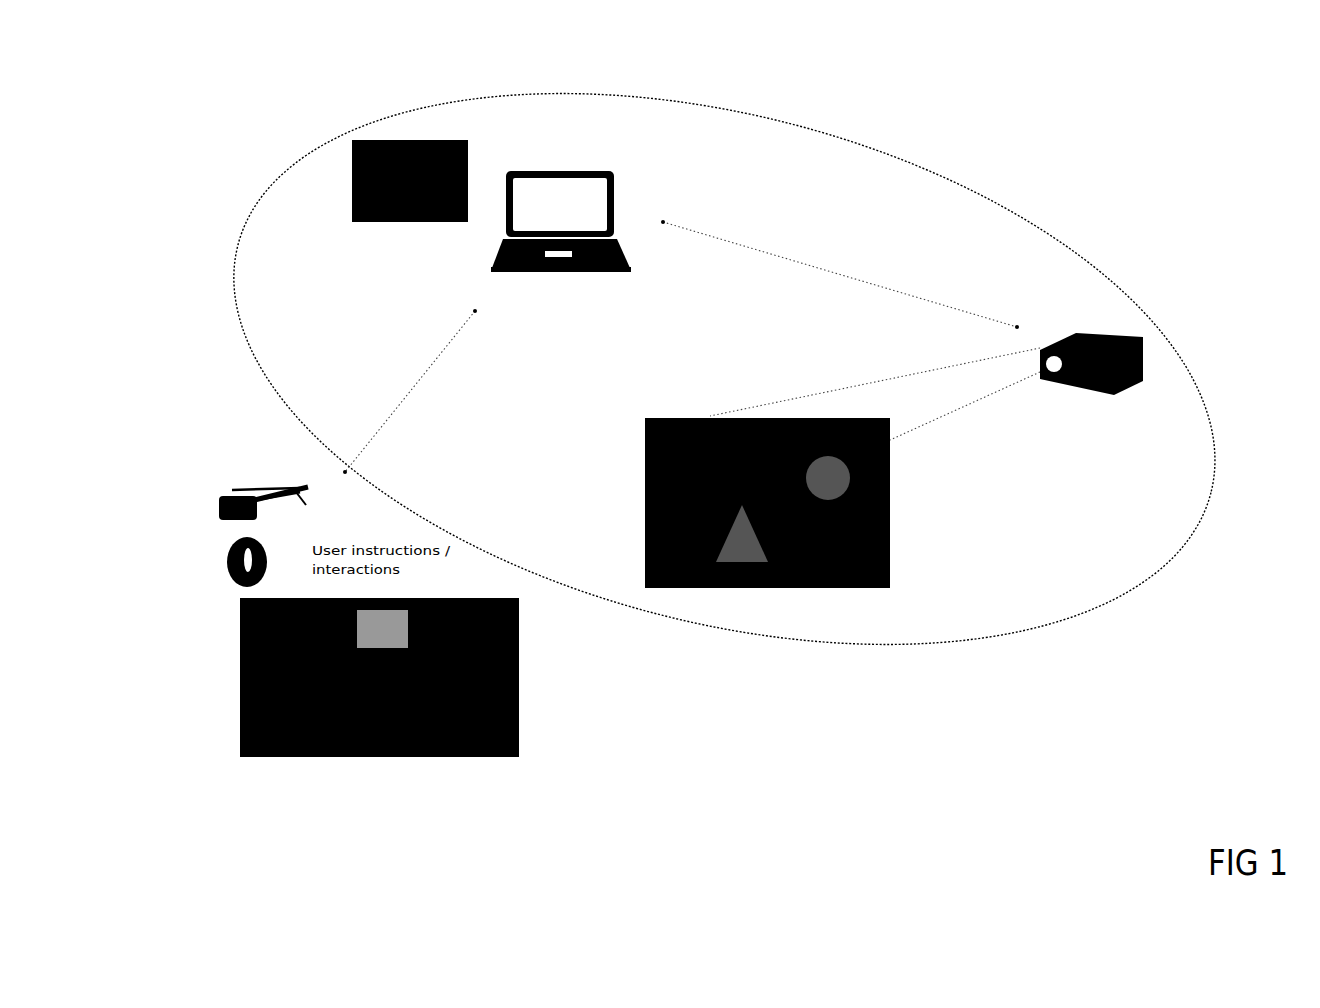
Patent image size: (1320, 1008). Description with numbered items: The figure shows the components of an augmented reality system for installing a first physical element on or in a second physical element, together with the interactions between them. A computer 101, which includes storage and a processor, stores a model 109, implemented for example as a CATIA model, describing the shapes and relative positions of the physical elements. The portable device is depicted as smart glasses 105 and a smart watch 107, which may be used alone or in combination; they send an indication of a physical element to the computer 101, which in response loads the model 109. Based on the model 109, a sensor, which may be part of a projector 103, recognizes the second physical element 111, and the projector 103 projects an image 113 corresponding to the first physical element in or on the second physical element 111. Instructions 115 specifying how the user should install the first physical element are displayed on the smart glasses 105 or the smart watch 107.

The computer 101 is at (614, 190).
The projector 103 is at (1143, 350).
The smart glasses 105 is at (212, 514).
The smart watch 107 is at (220, 562).
The model 109 is at (408, 140).
The second physical element 111 is at (890, 521).
The image 113 is at (708, 440).
The instructions 115 is at (519, 718).